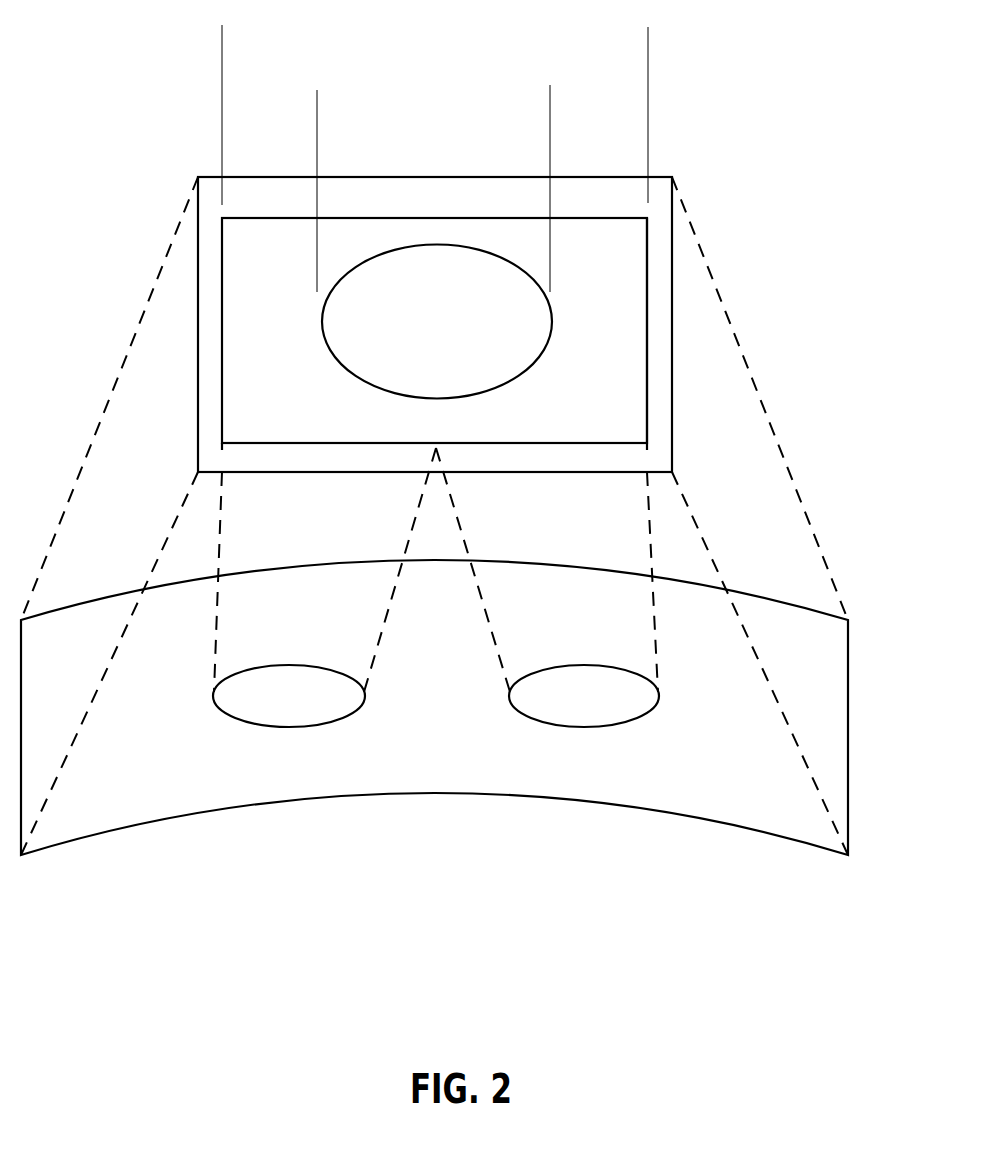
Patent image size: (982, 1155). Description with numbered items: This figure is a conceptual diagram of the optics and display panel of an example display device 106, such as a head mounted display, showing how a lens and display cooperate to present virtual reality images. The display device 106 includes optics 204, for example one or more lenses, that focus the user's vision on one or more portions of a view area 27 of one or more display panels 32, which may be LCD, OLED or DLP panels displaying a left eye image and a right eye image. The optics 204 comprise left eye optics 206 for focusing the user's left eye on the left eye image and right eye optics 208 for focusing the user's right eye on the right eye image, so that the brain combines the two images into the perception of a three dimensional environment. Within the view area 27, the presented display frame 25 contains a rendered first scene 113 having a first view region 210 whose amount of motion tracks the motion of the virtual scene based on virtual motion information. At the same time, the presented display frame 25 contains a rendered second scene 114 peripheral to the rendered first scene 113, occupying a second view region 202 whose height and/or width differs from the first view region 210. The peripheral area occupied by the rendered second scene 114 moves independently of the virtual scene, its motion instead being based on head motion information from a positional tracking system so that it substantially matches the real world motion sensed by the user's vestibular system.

The display device 106 is at (125, 45).
The display panels 32 is at (592, 177).
The view area 27 is at (588, 241).
The presented display frame 25 is at (648, 302).
The second view region 202 is at (222, 57).
The first view region 210 is at (317, 115).
The rendered first scene 113 is at (502, 349).
The rendered second scene 114 is at (605, 431).
The optics 204 is at (442, 800).
The left eye optics 206 is at (288, 727).
The right eye optics 208 is at (583, 727).